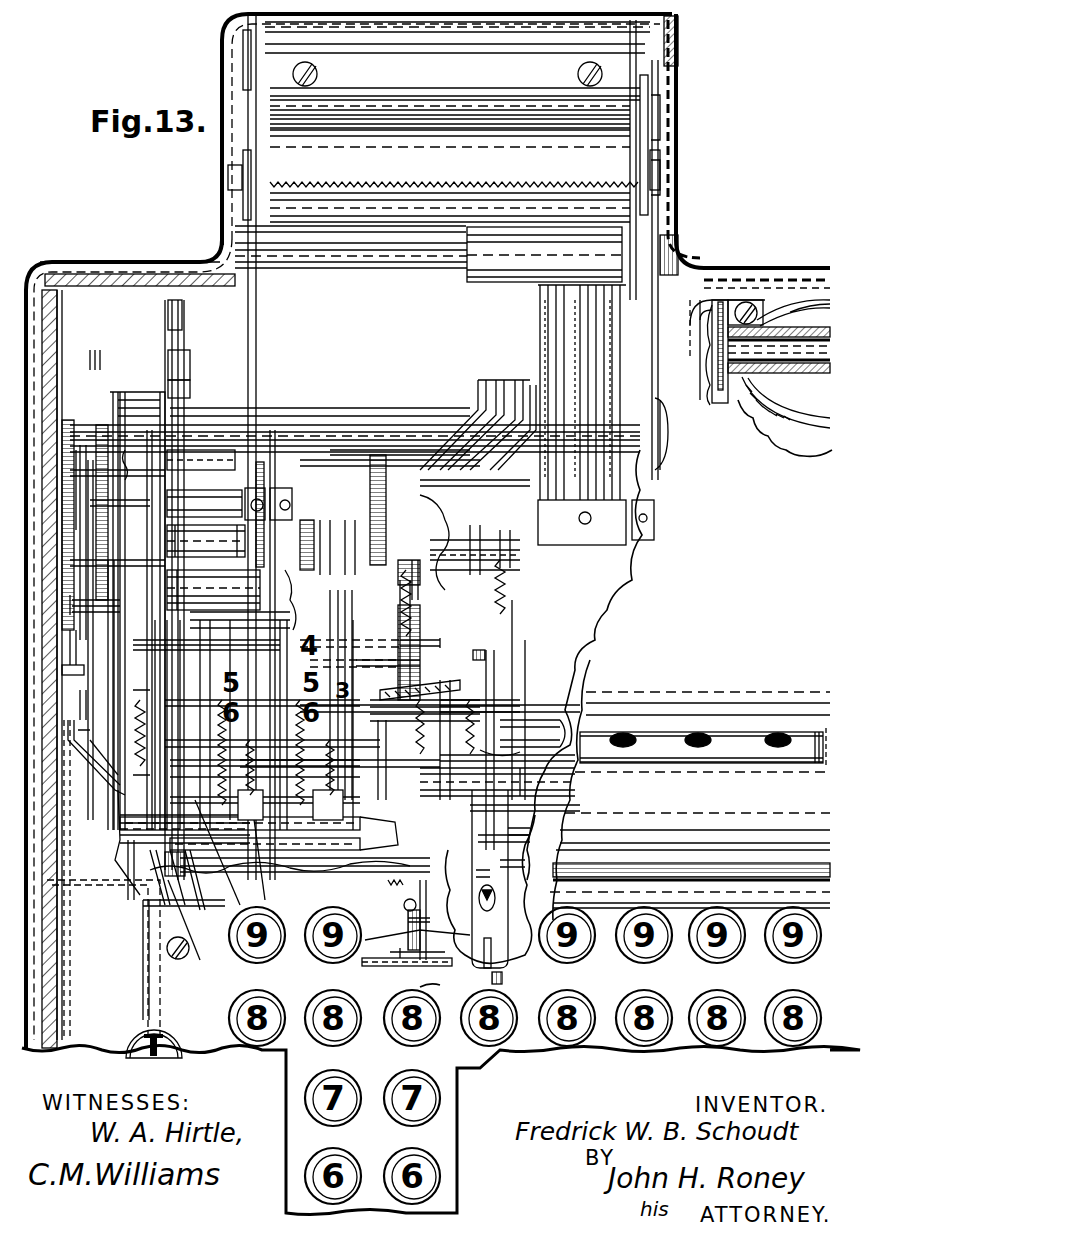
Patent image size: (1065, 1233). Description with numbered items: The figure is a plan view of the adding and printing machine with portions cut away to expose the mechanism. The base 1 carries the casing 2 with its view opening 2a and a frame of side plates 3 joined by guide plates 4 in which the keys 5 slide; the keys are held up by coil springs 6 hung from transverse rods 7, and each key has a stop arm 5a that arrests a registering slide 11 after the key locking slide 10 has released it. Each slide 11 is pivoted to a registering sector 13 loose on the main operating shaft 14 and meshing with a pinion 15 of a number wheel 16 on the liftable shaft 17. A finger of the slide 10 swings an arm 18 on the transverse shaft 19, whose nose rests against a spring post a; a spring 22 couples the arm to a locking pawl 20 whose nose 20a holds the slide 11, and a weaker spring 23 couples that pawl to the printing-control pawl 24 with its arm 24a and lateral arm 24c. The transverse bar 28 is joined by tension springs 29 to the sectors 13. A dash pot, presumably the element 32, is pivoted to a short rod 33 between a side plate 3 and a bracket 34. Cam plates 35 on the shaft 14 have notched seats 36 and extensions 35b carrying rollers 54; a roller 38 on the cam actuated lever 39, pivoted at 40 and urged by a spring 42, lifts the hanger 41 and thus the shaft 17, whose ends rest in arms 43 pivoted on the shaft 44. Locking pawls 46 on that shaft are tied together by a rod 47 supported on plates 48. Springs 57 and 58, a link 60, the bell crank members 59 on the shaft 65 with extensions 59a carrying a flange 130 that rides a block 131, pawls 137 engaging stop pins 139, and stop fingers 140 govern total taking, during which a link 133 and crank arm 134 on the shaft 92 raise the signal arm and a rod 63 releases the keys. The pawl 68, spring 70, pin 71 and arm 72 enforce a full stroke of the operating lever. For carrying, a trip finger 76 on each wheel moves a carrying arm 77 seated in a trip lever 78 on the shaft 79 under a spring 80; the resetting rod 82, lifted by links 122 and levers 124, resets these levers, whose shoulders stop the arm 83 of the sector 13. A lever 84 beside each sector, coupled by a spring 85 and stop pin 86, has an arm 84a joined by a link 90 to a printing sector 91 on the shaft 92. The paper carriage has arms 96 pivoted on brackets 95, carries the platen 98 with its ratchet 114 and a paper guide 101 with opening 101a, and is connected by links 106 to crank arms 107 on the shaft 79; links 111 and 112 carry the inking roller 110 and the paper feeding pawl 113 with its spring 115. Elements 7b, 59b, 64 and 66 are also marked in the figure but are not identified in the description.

The base 1 is at (215, 258).
The casing 2 is at (438, 923).
The view opening 2a is at (745, 750).
The side plates 3 is at (160, 320).
The guide plates 4 is at (422, 918).
The keys 5 is at (365, 943).
The stop arms 5a is at (418, 908).
The coil springs 6 is at (375, 964).
The rods 7 is at (395, 965).
The spring 7b is at (400, 895).
The key locking slide 10 is at (501, 887).
The registering slide 11 is at (352, 860).
The registering sectors 13 is at (410, 470).
The main operating shaft 14 is at (450, 540).
The pinions 15 is at (340, 650).
The number wheels 16 is at (352, 670).
The shaft 17 is at (345, 690).
The arm 18 is at (500, 705).
The transverse shaft 19 is at (530, 720).
The locking pawl 20 is at (508, 830).
The nose 20a is at (508, 863).
The spring 22 is at (540, 770).
The second spring 23 is at (525, 755).
The spring post a is at (525, 745).
The pawl 24 is at (494, 658).
The arm 24a is at (470, 680).
The lateral arm 24c is at (465, 688).
The transverse bar 28 is at (520, 575).
The tension springs 29 is at (422, 635).
The wheel 32 is at (785, 378).
The short rod 33 is at (770, 350).
The bracket 34 is at (712, 375).
The cam plate 35 is at (102, 425).
The extensions 35b is at (112, 870).
The notched seat 36 is at (95, 595).
The roller 38 is at (91, 460).
The cam actuated lever 39 is at (116, 400).
The pivot 40 is at (144, 400).
The hanger 41 is at (133, 732).
The spring 42 is at (136, 463).
The arms 43 is at (177, 904).
The shaft 44 is at (295, 575).
The locking pawl 46 is at (252, 608).
The rod 47 is at (195, 610).
The plates 48 is at (200, 540).
The rollers 54 is at (173, 844).
The spring 57 is at (229, 485).
The spring 58 is at (160, 905).
The bell crank member 59 is at (72, 750).
The extension 59a is at (77, 652).
The rod 59b is at (130, 900).
The link 60 is at (120, 870).
The rod 63 is at (590, 740).
The link 64 is at (192, 924).
The shaft 65 is at (400, 835).
The bar 66 is at (582, 800).
The pawl 68 is at (184, 336).
The spring 70 is at (184, 312).
The pin 71 is at (190, 392).
The arm 72 is at (190, 360).
The trip finger 76 is at (293, 600).
The carrying arm 77 is at (395, 700).
The trip lever 78 is at (330, 812).
The shaft 79 is at (430, 490).
The tension spring 80 is at (425, 672).
The resetting rod 82 is at (261, 847).
The stop arm 83 is at (420, 640).
The lever 84 is at (470, 425).
The lateral arm 84a is at (548, 385).
The tension spring 85 is at (435, 440).
The stop pin 86 is at (480, 395).
The link 90 is at (548, 305).
The printing sector 91 is at (548, 293).
The shaft 92 is at (300, 480).
The brackets 95 is at (457, 61).
The arms 96 is at (248, 125).
The platen 98 is at (454, 164).
The paper guide 101 is at (420, 215).
The opening 101a is at (465, 225).
The link 106 is at (248, 222).
The crank arm 107 is at (668, 408).
The inking roller 110 is at (544, 254).
The links 111 is at (248, 222).
The links 112 is at (268, 286).
The paper feeding pawl 113 is at (660, 248).
The ratchet 114 is at (648, 158).
The spring 115 is at (705, 280).
The link 122 is at (225, 857).
The lever 124 is at (202, 889).
The flange 130 is at (85, 450).
The block 131 is at (64, 420).
The link 133 is at (70, 502).
The crank arm 134 is at (68, 420).
The pawls 137 is at (100, 760).
The stop pins 139 is at (97, 710).
The stop fingers 140 is at (76, 738).